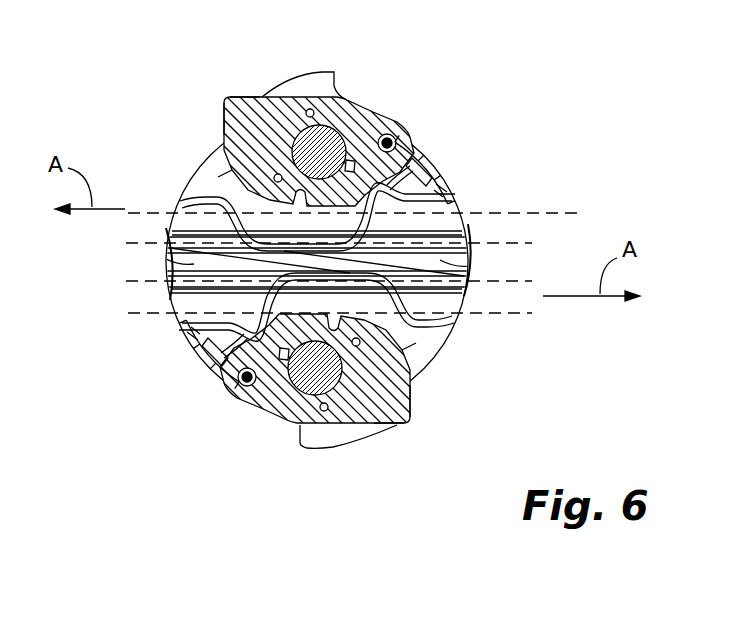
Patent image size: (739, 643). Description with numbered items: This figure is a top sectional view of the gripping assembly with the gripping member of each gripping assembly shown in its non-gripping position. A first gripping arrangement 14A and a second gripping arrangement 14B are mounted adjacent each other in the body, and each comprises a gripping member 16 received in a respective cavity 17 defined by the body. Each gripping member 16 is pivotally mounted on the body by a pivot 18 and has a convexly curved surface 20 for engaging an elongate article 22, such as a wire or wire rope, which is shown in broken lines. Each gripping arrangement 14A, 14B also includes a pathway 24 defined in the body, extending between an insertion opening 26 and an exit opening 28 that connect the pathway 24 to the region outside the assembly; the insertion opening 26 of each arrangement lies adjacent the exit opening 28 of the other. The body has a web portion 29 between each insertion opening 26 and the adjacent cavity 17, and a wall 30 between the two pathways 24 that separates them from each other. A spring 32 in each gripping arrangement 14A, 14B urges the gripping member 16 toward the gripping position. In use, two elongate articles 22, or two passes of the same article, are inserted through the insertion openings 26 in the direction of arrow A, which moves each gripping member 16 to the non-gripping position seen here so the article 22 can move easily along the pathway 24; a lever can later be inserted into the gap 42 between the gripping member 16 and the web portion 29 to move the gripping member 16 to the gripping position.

The first gripping arrangement 14A is at (318, 90).
The second gripping arrangement 14B is at (345, 446).
The gripping member 16 is at (248, 92).
The cavity 17 is at (218, 177).
The pivot 18 is at (340, 132).
The convexly curved surface 20 is at (222, 165).
The elongate article 22 is at (92, 347).
The pathway 24 is at (168, 234).
The insertion opening 26 is at (462, 206).
The exit opening 28 is at (176, 212).
The web portion 29 is at (446, 186).
The wall 30 is at (468, 258).
The spring 32 is at (428, 162).
The gap 42 is at (394, 138).